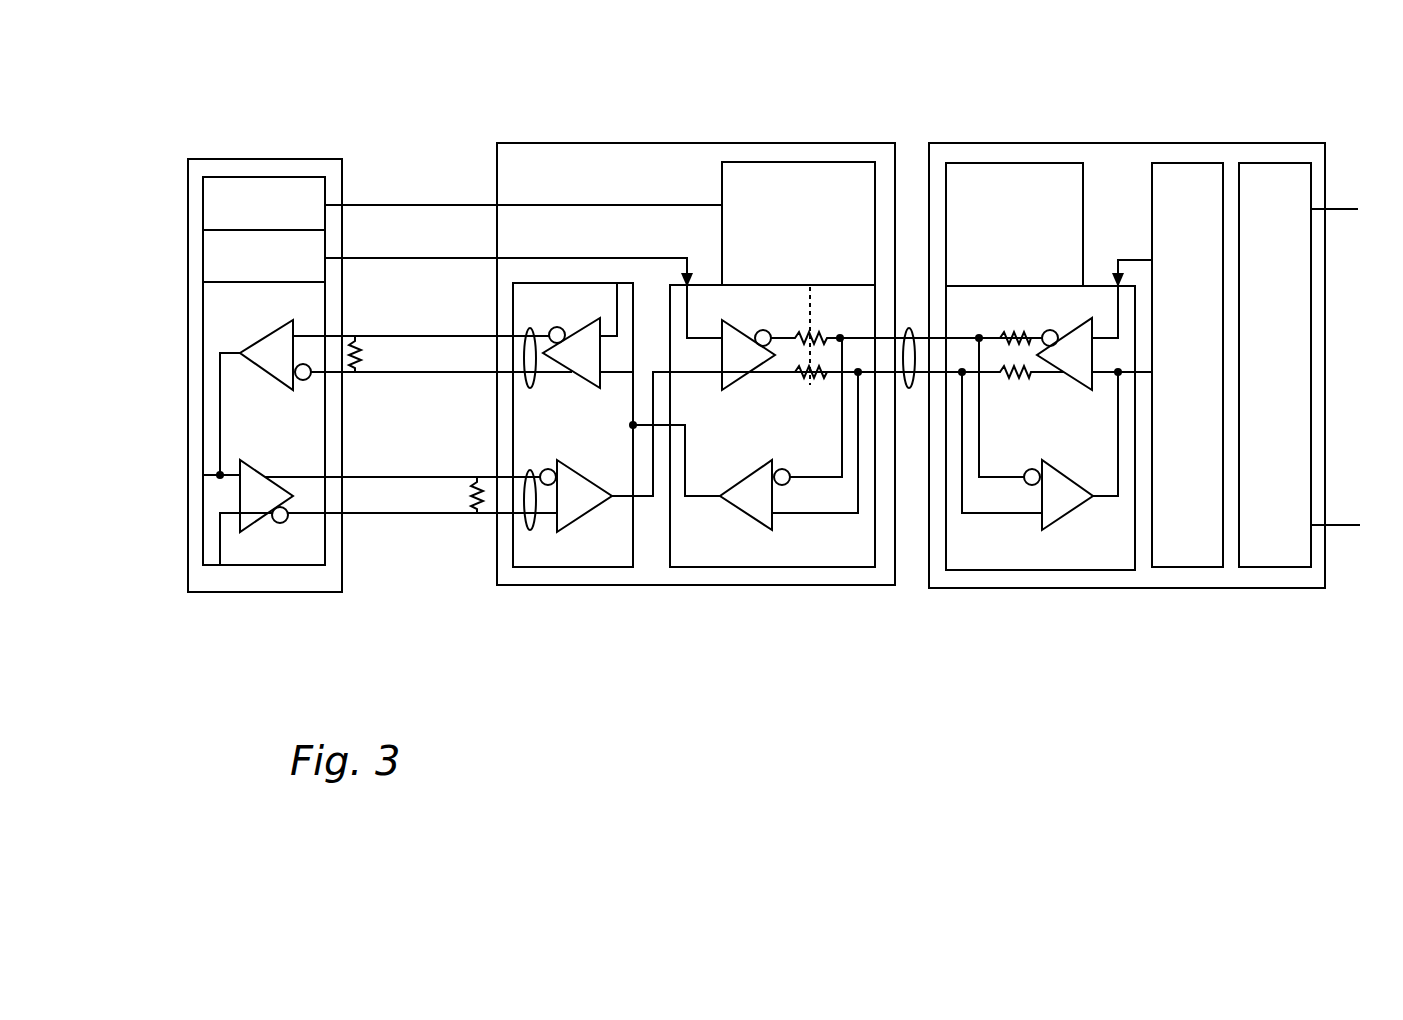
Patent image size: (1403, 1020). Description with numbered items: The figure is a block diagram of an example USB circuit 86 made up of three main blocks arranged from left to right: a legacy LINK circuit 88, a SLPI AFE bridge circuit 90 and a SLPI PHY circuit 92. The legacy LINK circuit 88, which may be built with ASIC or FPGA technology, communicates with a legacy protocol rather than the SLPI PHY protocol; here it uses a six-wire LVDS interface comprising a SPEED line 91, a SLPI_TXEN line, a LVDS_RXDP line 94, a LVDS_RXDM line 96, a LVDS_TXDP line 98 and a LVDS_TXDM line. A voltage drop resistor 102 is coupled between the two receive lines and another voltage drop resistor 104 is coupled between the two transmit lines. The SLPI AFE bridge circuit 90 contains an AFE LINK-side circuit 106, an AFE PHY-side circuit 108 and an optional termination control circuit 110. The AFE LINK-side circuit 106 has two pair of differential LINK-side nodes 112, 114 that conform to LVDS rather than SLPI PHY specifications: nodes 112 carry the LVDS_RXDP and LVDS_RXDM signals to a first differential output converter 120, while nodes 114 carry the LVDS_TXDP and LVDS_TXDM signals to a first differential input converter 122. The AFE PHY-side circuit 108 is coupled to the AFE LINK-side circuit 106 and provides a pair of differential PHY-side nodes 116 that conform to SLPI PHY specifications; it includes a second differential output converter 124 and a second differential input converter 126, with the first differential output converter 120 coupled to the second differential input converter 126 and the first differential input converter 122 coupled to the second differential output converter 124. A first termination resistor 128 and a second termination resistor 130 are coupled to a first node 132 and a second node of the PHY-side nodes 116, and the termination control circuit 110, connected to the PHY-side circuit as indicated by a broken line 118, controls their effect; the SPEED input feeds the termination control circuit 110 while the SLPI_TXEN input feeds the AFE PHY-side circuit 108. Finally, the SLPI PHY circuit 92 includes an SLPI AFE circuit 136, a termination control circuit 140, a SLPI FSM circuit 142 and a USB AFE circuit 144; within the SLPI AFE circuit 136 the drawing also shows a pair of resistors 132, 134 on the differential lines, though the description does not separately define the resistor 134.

The USB circuit 86 is at (827, 61).
The legacy LINK circuit 88 is at (266, 146).
The SLPI AFE bridge circuit 90 is at (695, 597).
The SPEED line 91 is at (353, 204).
The SLPI PHY circuit 92 is at (353, 257).
The LVDS_RXDP line 94 is at (353, 333).
The LVDS_RXDM line 96 is at (410, 377).
The LVDS_TXDP line 98 is at (462, 474).
The voltage drop resistor 102 is at (358, 374).
The voltage drop resistor 104 is at (472, 511).
The AFE LINK-side circuit 106 is at (623, 556).
The AFE PHY-side circuit 108 is at (848, 556).
The termination control circuit 110 is at (853, 181).
The differential LINK-side nodes 112 is at (527, 386).
The differential LINK-side nodes 114 is at (527, 528).
The differential PHY-side nodes 116 is at (906, 386).
The broken line 118 is at (818, 320).
The first differential output converter 120 is at (588, 323).
The first differential input converter 122 is at (560, 460).
The second differential output converter 124 is at (730, 388).
The second differential input converter 126 is at (765, 465).
The first termination resistor 128 is at (802, 334).
The second termination resistor 130 is at (800, 382).
The node of the pair of differential PHY-side nodes 132 is at (938, 337).
The PHY termination resistor 134 is at (972, 380).
The SLPI AFE circuit 136 is at (995, 560).
The termination control circuit 140 is at (966, 183).
The SLPI FSM circuit 142 is at (1173, 183).
The USB AFE circuit 144 is at (1265, 183).